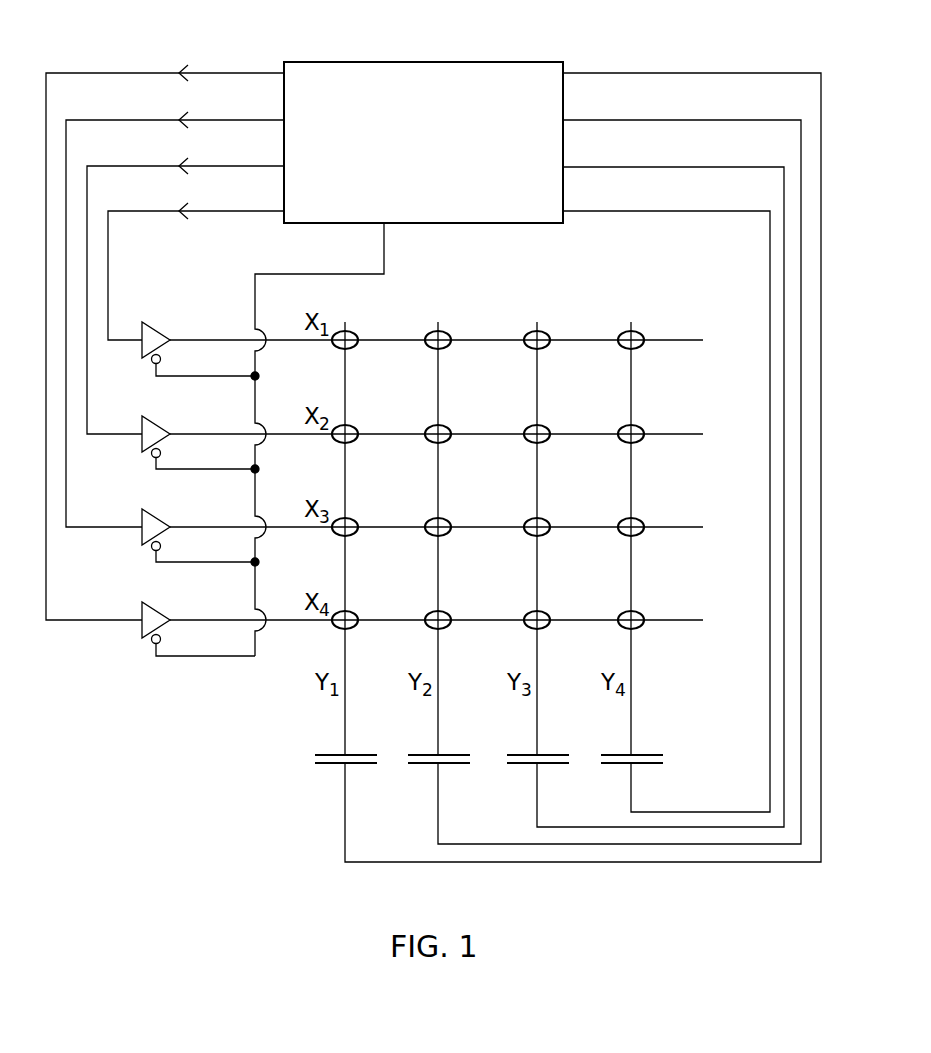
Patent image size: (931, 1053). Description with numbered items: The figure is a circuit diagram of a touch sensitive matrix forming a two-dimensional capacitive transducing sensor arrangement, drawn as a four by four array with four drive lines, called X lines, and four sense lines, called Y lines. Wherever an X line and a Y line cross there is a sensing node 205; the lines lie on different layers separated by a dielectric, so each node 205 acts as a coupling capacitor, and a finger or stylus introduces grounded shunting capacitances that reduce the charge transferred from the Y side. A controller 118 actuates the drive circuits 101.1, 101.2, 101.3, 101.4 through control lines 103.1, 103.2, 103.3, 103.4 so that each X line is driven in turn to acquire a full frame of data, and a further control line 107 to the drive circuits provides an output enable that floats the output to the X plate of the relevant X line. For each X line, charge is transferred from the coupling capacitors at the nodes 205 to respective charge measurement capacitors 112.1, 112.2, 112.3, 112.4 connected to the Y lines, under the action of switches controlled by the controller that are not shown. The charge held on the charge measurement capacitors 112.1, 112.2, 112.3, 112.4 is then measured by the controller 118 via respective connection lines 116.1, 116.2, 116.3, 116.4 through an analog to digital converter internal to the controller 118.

The controller 118 is at (470, 60).
The further control line 107 is at (385, 250).
The control line 103.1 is at (97, 84).
The control line 103.2 is at (119, 131).
The control line 103.3 is at (137, 177).
The control line 103.4 is at (153, 222).
The drive circuit 101.1 is at (168, 314).
The drive circuit 101.2 is at (168, 408).
The drive circuit 101.3 is at (168, 501).
The drive circuit 101.4 is at (168, 594).
The sensing node 205 is at (372, 318).
The charge measurement capacitor 112.1 is at (320, 752).
The charge measurement capacitor 112.2 is at (413, 752).
The charge measurement capacitor 112.3 is at (512, 752).
The charge measurement capacitor 112.4 is at (603, 752).
The connection line 116.1 is at (343, 808).
The connection line 116.2 is at (436, 808).
The connection line 116.3 is at (535, 808).
The connection line 116.4 is at (629, 808).